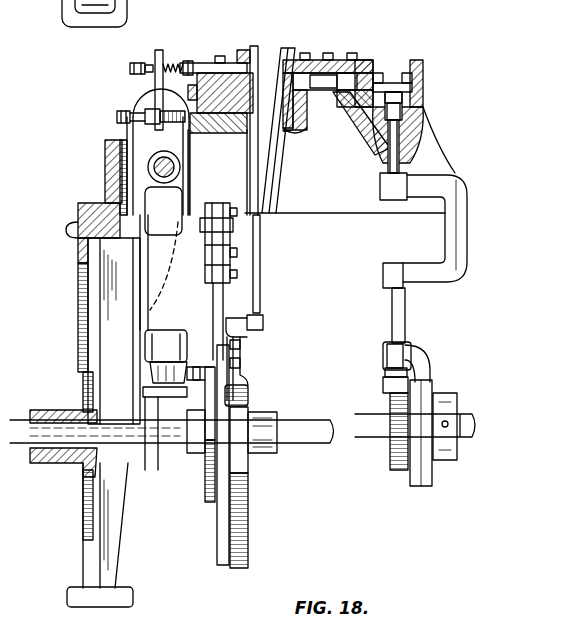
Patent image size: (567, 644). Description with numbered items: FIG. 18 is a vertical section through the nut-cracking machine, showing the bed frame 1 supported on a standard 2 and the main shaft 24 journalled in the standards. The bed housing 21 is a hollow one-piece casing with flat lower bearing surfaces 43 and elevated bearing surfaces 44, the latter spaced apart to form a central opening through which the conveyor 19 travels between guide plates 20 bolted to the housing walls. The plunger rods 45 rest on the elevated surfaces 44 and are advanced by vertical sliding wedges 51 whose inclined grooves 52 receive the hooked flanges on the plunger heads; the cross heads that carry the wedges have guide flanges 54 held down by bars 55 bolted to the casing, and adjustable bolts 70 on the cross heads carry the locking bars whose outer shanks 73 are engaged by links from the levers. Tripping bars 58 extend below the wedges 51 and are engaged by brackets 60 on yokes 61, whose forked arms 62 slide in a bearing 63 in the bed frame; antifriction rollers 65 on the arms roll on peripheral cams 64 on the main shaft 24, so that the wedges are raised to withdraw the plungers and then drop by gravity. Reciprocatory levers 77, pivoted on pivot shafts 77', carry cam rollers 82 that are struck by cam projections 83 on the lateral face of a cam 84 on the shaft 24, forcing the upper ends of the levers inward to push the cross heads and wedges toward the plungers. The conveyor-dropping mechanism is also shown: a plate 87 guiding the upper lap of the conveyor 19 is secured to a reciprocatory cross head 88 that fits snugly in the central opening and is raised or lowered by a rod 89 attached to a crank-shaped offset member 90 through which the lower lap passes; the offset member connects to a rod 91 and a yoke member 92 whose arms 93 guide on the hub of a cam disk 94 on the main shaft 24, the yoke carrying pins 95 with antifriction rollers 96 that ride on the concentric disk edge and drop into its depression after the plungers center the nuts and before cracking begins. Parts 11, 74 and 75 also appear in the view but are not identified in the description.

The bed frame 1 is at (76, 236).
The standard 2 is at (87, 545).
The plate 11 is at (262, 120).
The carrying belt or conveyor 19 is at (392, 91).
The guide plates 20 is at (373, 64).
The bed housing 21 is at (360, 125).
The main shaft 24 is at (354, 440).
The flat lower bearing surfaces 43 is at (213, 133).
The elevated bearing surfaces 44 is at (308, 112).
The plunger rods 45 is at (308, 73).
The vertical sliding wedges 51 is at (258, 191).
The inclined grooves 52 is at (280, 210).
The guide flanges 54 is at (217, 172).
The bars 55 is at (160, 97).
The tripping bars 58 is at (261, 268).
The brackets 60 is at (264, 321).
The yokes 61 is at (240, 378).
The forked arms 62 is at (223, 566).
The bearing 63 is at (240, 50).
The peripheral cams 64 is at (250, 554).
The antifriction rollers 65 is at (250, 387).
The adjustable bolts 70 is at (215, 58).
The shanks 73 is at (182, 61).
The bar 74 is at (159, 52).
The bolt 75 is at (136, 63).
The reciprocatory levers 77 is at (133, 323).
The pivot shafts 77' is at (114, 240).
The cam rollers 82 is at (155, 380).
The cam projections 83 is at (205, 362).
The cam 84 is at (207, 502).
The plate 87 is at (427, 99).
The reciprocatory cross head 88 is at (428, 119).
The rod 89 is at (405, 156).
The offset member 90 is at (468, 250).
The rod 91 is at (406, 317).
The yoke member 92 is at (432, 372).
The arms 93 is at (434, 480).
The cam disk 94 is at (394, 471).
The pins 95 is at (386, 393).
The antifriction rollers 96 is at (388, 373).